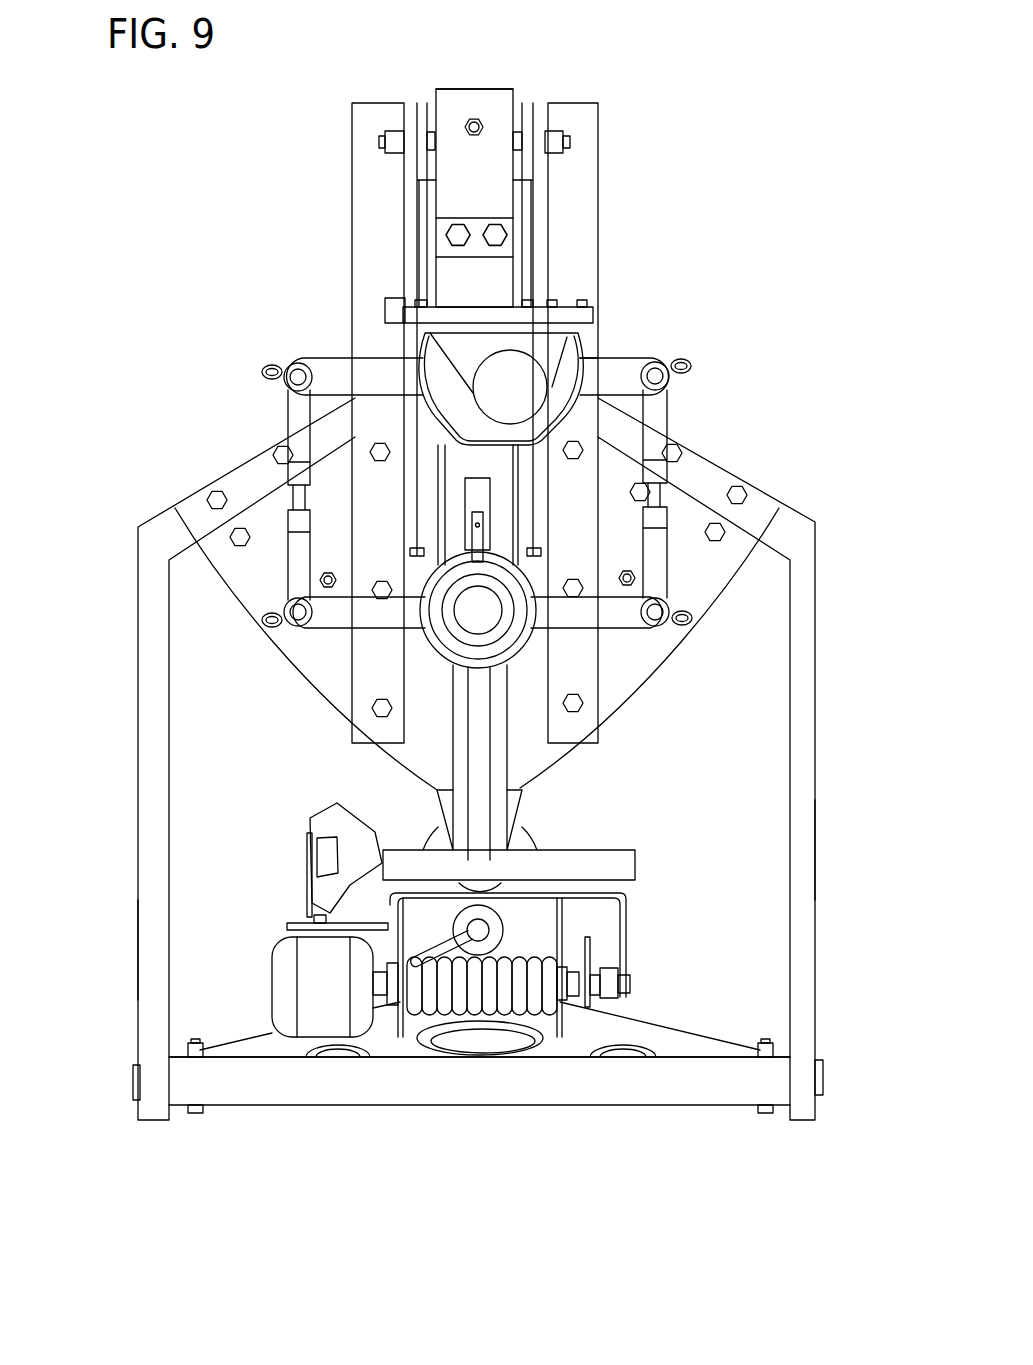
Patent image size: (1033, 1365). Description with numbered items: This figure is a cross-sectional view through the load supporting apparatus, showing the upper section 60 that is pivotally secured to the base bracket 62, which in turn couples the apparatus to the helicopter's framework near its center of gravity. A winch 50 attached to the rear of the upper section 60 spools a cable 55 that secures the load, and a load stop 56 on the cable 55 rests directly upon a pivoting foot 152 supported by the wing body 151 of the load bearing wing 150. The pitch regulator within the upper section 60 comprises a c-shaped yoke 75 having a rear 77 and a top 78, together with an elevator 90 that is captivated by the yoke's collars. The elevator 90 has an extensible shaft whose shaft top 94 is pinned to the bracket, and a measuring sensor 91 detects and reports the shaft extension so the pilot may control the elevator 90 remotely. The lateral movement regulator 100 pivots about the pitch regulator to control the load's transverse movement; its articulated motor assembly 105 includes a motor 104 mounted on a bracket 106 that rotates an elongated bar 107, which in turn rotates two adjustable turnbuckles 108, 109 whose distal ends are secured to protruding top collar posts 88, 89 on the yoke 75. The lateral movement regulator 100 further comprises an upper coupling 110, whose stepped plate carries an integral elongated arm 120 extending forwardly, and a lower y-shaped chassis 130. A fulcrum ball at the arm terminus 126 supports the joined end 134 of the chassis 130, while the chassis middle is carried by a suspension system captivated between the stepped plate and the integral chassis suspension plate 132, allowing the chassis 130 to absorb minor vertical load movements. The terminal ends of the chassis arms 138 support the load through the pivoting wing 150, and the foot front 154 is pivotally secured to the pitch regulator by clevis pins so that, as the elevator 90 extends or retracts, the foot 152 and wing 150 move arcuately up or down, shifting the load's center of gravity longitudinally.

The winch 50 is at (389, 1045).
The cable 55 is at (447, 937).
The load stop 56 is at (565, 903).
The upper section 60 is at (108, 506).
The base bracket 62 is at (326, 828).
The c-shaped yoke 75 is at (549, 813).
The rear 77 is at (568, 857).
The top 78 is at (480, 772).
The top collar post 88 is at (617, 615).
The top collar post 89 is at (333, 636).
The elevator 90 is at (443, 553).
The measuring sensor 91 is at (482, 490).
The shaft top 94 is at (486, 612).
The lateral movement regulator 100 is at (542, 86).
The motor 104 is at (605, 412).
The articulated motor assembly 105 is at (602, 340).
The bracket 106 is at (490, 317).
The elongated bar 107 is at (340, 370).
The adjustable turnbuckle 108 is at (660, 418).
The adjustable turnbuckle 109 is at (292, 420).
The upper coupling 110 is at (486, 89).
The integral elongated arm 120 is at (505, 137).
The arm terminus 126 is at (476, 86).
The y-shaped chassis 130 is at (333, 222).
The chassis suspension plate 132 is at (257, 513).
The joined end 134 is at (375, 115).
The chassis arms 138 is at (816, 838).
The load bearing wing 150 is at (234, 1130).
The wing body 151 is at (312, 1093).
The pivoting foot 152 is at (545, 940).
The foot front 154 is at (433, 830).